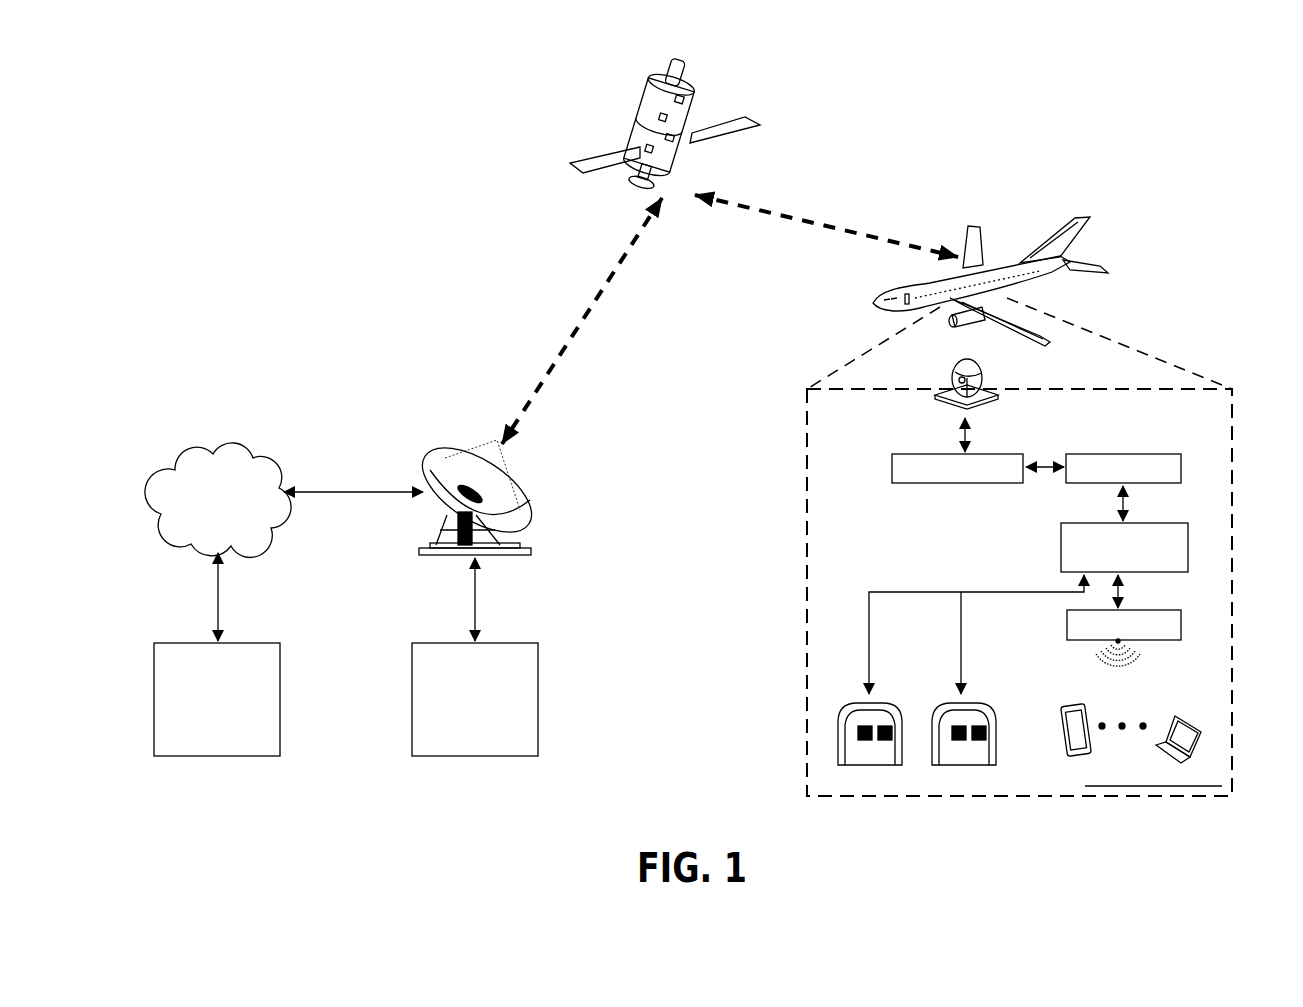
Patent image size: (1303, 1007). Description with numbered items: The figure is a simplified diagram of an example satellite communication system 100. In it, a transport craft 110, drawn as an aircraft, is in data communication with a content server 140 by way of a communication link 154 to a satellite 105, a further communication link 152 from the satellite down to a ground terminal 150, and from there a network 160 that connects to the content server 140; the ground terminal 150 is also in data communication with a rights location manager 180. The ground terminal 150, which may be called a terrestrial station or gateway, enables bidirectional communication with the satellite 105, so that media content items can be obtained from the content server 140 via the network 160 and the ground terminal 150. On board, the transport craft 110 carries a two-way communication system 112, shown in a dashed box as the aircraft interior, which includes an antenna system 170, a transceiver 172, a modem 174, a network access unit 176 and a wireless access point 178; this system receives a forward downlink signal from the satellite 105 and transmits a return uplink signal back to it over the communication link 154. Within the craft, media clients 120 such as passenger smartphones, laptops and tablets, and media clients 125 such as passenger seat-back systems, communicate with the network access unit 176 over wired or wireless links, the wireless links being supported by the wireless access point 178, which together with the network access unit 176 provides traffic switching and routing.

The satellite communication system 100 is at (226, 90).
The satellite 105 is at (641, 62).
The transport craft 110 is at (985, 238).
The two-way communication system 112 is at (1113, 340).
The media clients 120 is at (1083, 708).
The media clients 125 is at (883, 700).
The content server 140 is at (201, 736).
The ground terminal 150 is at (423, 456).
The communication link 152 is at (610, 276).
The communication link 154 is at (838, 212).
The network 160 is at (201, 521).
The antenna system 170 is at (990, 400).
The transceiver 172 is at (892, 468).
The modem 174 is at (1145, 452).
The network access unit 176 is at (1148, 573).
The wireless access point 178 is at (1140, 642).
The rights location manager 180 is at (459, 748).